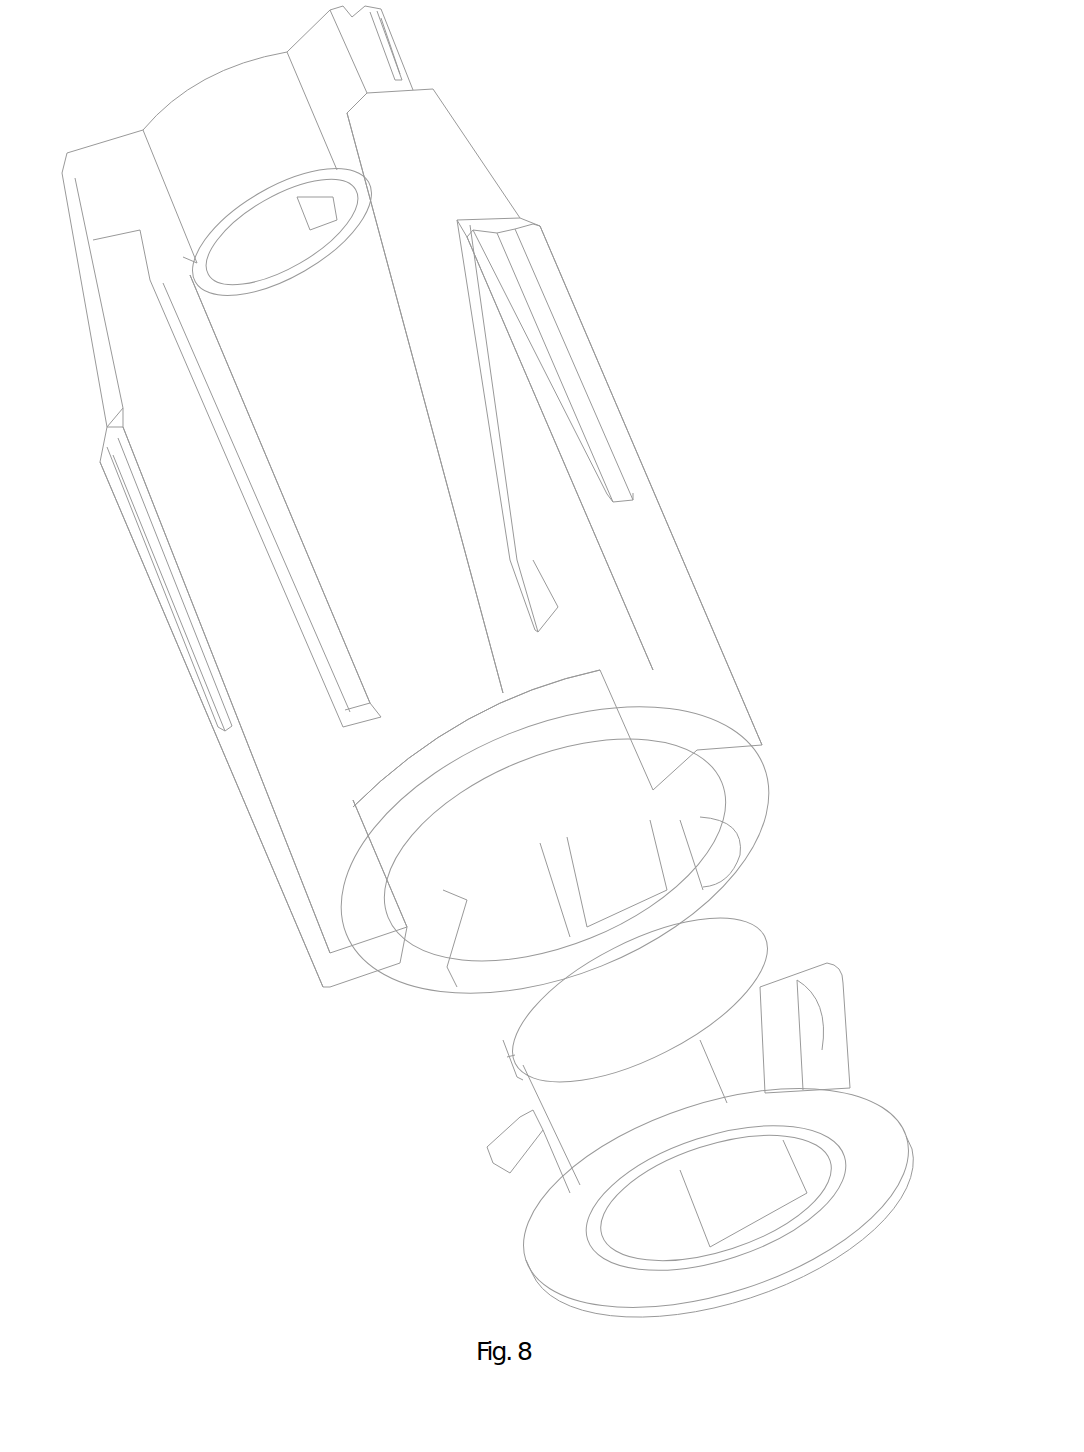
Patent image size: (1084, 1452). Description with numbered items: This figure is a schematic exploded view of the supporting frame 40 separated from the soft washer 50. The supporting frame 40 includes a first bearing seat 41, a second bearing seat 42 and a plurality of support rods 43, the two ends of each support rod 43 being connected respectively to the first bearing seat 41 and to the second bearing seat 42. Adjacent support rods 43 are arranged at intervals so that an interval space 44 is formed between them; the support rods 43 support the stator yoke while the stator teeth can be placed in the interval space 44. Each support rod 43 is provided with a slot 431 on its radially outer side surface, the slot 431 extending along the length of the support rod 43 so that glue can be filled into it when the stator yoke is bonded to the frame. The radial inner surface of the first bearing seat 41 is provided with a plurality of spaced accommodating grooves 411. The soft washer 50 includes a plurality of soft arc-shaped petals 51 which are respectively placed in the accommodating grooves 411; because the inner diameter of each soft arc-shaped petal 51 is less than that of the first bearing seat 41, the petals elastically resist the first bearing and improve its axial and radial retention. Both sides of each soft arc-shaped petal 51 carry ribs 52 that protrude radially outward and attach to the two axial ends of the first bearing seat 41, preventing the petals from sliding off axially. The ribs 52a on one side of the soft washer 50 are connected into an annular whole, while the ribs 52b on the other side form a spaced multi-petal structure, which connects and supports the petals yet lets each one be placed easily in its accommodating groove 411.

The supporting frame 40 is at (447, 528).
The first bearing seat 41 is at (407, 830).
The second bearing seat 42 is at (205, 122).
The support rod 43 is at (652, 567).
The slot 431 is at (547, 307).
The interval space 44 is at (357, 623).
The accommodating groove 411 is at (710, 843).
The soft washer 50 is at (639, 1117).
The soft arc-shaped petal 51 is at (810, 1060).
The rib 52 is at (383, 1115).
The ribs on one side 52a is at (840, 1220).
The ribs on the other side 52b is at (517, 1055).